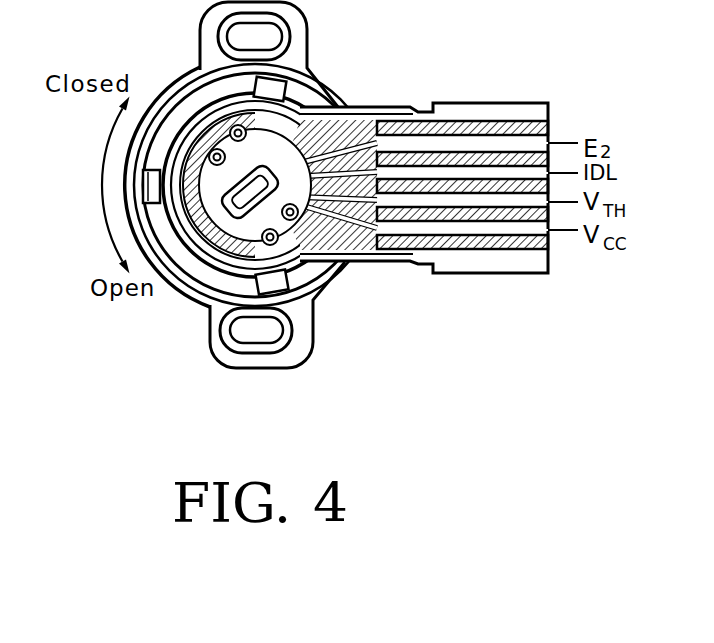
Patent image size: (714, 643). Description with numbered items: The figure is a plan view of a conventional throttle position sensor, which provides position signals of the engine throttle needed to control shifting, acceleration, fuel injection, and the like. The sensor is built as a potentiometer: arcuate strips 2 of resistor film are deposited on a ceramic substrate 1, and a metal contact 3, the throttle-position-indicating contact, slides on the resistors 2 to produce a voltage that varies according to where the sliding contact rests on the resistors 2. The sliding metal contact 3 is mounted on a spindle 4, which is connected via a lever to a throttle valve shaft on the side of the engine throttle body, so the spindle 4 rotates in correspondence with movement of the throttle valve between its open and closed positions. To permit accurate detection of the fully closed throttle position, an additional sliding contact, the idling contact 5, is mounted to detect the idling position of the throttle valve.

The ceramic substrate 1 is at (180, 100).
The arcuate strips of resistor film 2 is at (190, 250).
The metal contact 3 is at (290, 272).
The spindle 4 is at (195, 212).
The idling contact 5 is at (278, 112).